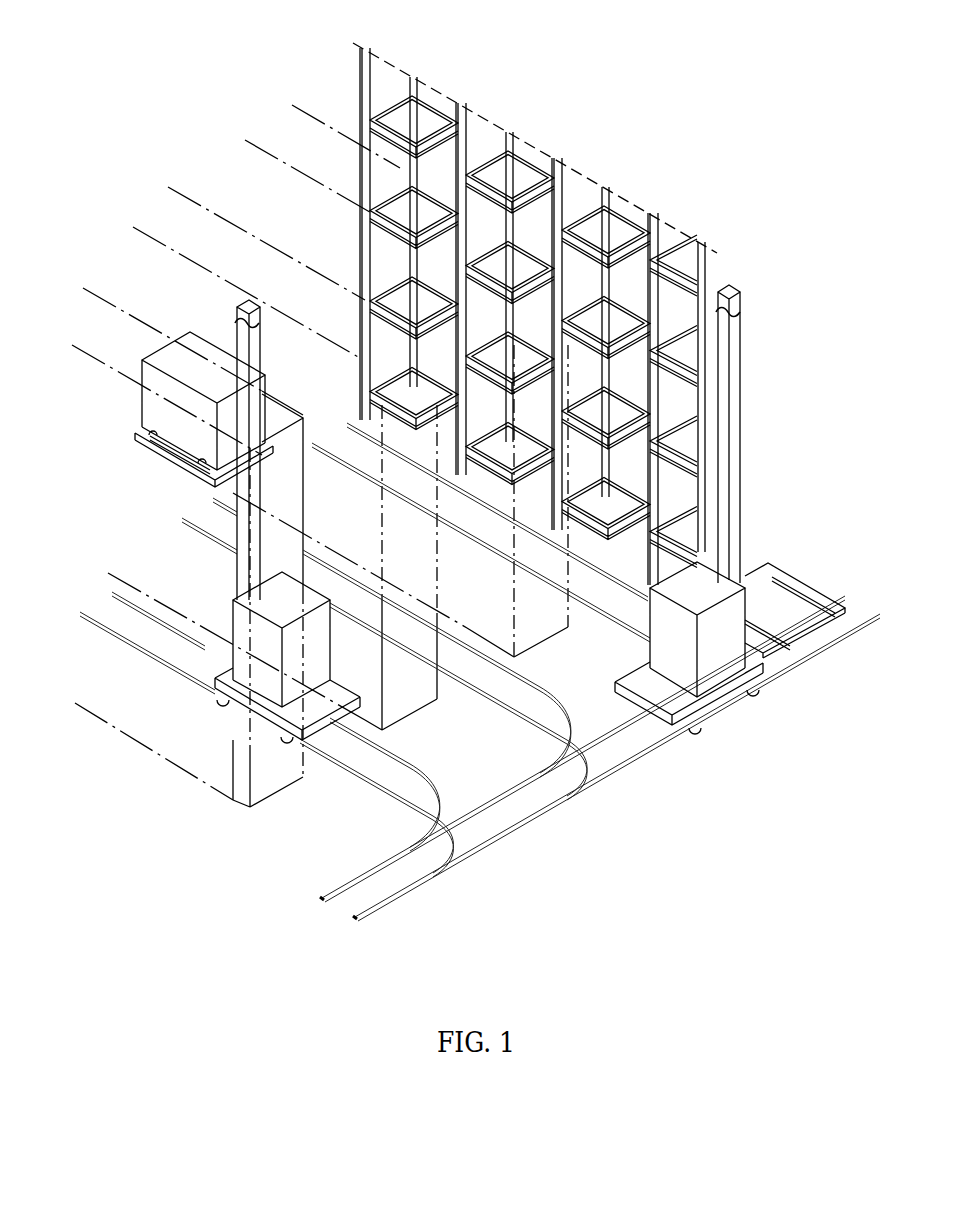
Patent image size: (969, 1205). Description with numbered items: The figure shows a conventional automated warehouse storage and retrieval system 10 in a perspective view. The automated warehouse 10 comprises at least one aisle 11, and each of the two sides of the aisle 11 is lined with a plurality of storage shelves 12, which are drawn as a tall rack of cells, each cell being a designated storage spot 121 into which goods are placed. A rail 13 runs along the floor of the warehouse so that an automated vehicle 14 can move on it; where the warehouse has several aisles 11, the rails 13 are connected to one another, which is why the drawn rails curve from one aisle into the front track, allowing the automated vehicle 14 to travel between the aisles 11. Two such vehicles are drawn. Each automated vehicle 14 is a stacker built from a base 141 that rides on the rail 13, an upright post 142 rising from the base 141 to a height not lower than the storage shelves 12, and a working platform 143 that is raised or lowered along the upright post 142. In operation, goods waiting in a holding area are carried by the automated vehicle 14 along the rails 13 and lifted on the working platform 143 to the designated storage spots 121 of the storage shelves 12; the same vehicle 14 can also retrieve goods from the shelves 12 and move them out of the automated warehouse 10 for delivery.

The automated warehouse storage and retrieval system 10 is at (628, 800).
The aisle 11 is at (348, 98).
The storage shelves 12 is at (287, 272).
The storage spots 121 is at (527, 148).
The rail 13 is at (375, 478).
The automated vehicle 14 is at (217, 675).
The base 141 is at (633, 678).
The upright post 142 is at (257, 350).
The working platform 143 is at (150, 450).